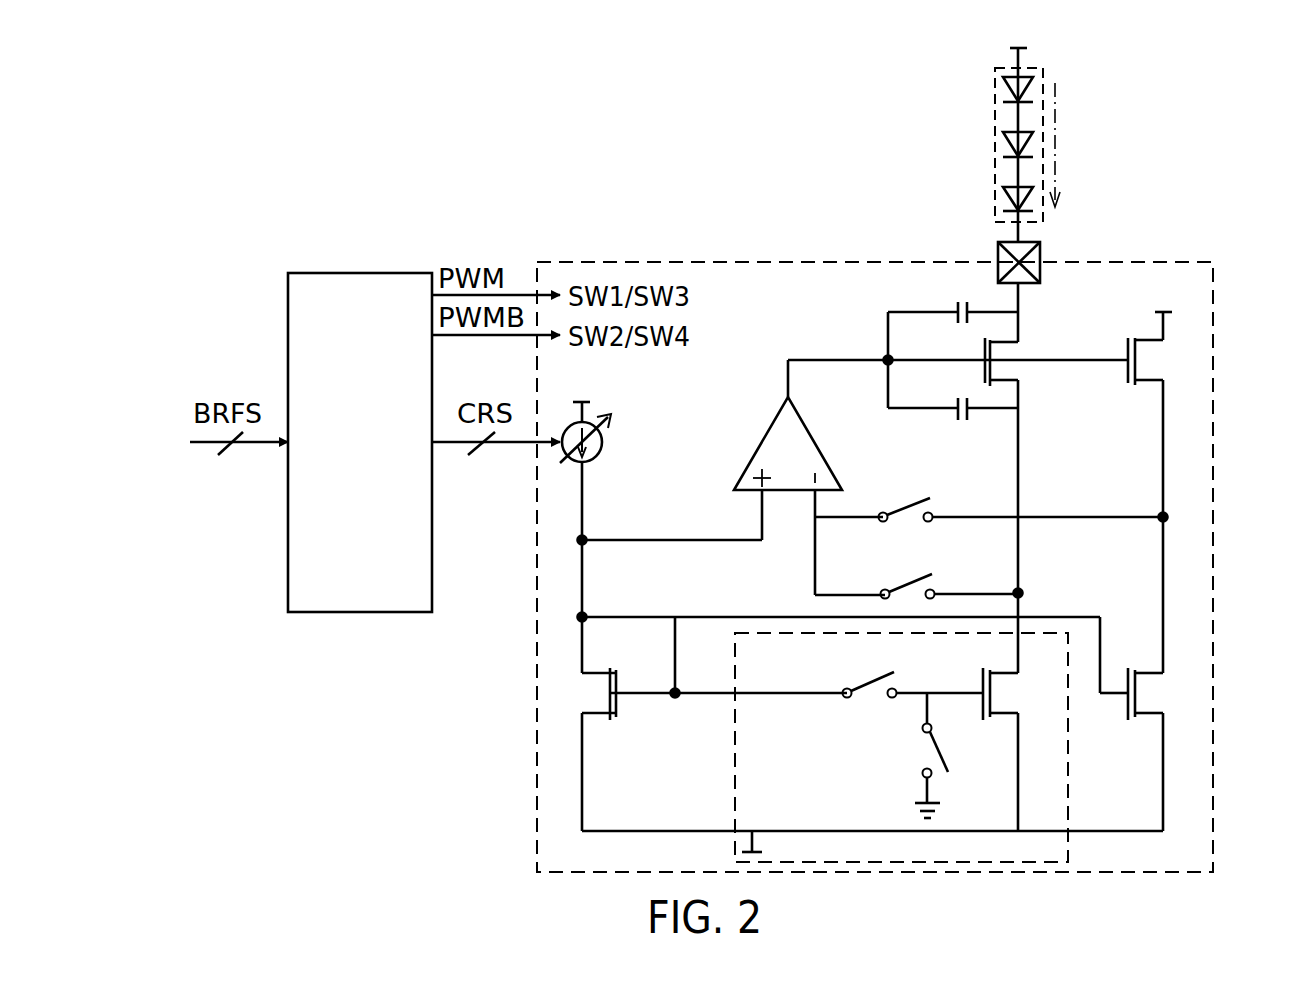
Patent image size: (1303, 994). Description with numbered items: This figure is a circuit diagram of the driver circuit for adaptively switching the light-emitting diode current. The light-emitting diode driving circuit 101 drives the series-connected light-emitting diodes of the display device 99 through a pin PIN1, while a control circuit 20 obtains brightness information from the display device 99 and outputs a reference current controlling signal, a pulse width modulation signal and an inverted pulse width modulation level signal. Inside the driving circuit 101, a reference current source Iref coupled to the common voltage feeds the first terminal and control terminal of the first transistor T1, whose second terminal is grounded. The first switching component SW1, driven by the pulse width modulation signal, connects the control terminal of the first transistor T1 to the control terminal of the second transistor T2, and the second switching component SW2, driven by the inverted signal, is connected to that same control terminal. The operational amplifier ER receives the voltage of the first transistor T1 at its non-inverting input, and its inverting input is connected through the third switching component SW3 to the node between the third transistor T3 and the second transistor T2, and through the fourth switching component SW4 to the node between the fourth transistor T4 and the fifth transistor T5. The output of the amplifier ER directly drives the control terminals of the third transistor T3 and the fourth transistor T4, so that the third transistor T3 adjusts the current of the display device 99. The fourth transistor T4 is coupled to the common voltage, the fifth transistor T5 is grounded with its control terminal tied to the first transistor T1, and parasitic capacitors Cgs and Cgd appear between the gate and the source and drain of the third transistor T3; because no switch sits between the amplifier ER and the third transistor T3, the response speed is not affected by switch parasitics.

The control circuit 20 is at (360, 273).
The display device 99 is at (995, 124).
The light-emitting diode driving circuit 101 is at (711, 262).
The pin PIN1 is at (998, 250).
The first transistor T1 is at (698, 724).
The second transistor T2 is at (1020, 749).
The third transistor T3 is at (1021, 478).
The fourth transistor T4 is at (1165, 476).
The fifth transistor T5 is at (1165, 749).
The first switching component SW1 is at (913, 670).
The second switching component SW2 is at (904, 755).
The third switching component SW3 is at (950, 569).
The fourth switching component SW4 is at (1021, 493).
The parasitic capacitor Cgd is at (953, 301).
The parasitic capacitor Cgs is at (953, 397).
The operational amplifier ER is at (760, 443).
The reference current source Iref is at (600, 494).